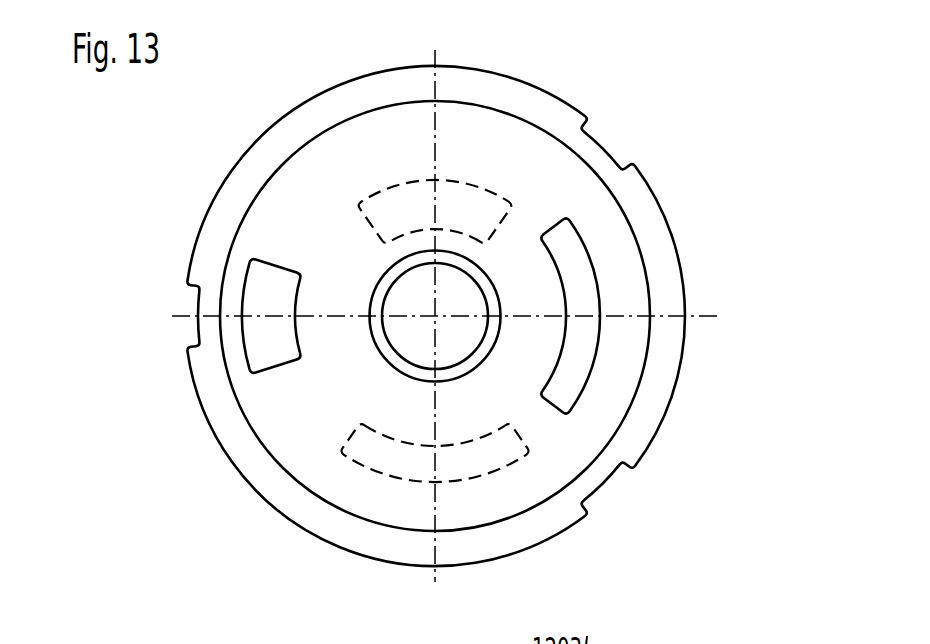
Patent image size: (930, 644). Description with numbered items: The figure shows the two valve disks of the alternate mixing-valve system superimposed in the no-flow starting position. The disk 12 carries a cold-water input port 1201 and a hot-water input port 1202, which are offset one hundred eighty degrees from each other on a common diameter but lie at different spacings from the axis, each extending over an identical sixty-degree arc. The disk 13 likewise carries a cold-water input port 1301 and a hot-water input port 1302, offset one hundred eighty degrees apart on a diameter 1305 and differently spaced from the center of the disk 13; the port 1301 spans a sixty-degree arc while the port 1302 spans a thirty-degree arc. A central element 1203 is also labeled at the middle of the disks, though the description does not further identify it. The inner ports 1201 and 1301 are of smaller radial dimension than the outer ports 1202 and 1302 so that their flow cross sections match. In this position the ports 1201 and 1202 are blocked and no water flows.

The disk 12 is at (633, 192).
The disk 13 is at (617, 267).
The diameter 1305 is at (493, 303).
The central hole 1203 is at (456, 333).
The cold-water input port 1301 is at (578, 367).
The hot-water input port 1302 is at (270, 337).
The hot-water input port 1202 is at (465, 200).
The cold-water input port 1201 is at (387, 455).